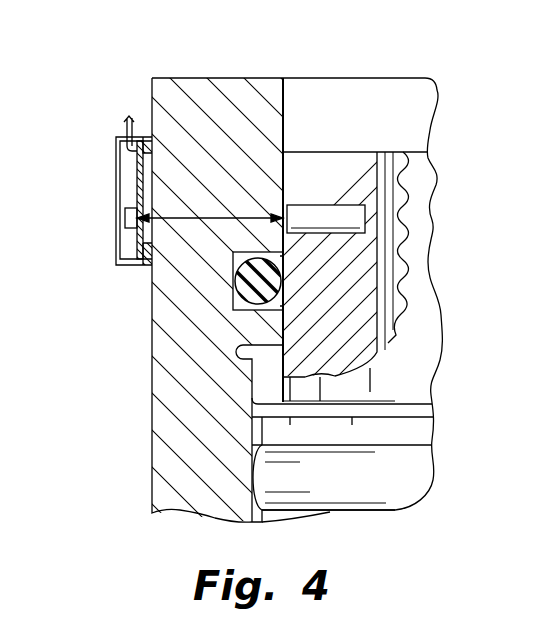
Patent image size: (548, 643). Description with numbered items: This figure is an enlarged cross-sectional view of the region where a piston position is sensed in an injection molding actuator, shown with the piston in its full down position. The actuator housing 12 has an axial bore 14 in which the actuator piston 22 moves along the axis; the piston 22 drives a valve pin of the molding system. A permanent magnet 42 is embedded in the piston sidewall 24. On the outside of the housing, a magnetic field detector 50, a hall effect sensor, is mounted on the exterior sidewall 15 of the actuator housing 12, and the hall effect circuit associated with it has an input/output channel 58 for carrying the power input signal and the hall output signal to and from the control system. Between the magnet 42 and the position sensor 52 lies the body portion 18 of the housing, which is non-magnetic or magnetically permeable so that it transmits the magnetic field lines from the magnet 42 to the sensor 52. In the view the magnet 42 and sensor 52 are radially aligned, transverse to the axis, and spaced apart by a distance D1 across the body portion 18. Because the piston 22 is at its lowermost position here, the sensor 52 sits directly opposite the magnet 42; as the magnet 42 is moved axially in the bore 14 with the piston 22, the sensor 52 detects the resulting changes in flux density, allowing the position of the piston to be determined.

The actuator housing 12 is at (276, 78).
The axial bore 14 is at (285, 113).
The exterior sidewall 15 is at (152, 427).
The body portion 18 is at (170, 318).
The actuator piston 22 is at (355, 150).
The piston sidewall 24 is at (422, 392).
The permanent magnet 42 is at (365, 222).
The magnetic field detector 50 is at (113, 187).
The position sensor 52 is at (125, 217).
The input/output channel 58 is at (125, 128).
The distance D1 is at (210, 220).